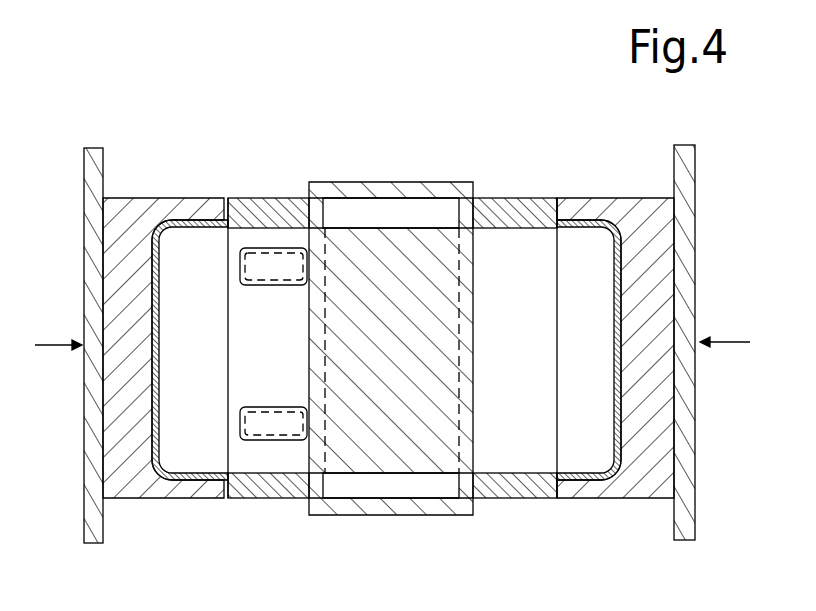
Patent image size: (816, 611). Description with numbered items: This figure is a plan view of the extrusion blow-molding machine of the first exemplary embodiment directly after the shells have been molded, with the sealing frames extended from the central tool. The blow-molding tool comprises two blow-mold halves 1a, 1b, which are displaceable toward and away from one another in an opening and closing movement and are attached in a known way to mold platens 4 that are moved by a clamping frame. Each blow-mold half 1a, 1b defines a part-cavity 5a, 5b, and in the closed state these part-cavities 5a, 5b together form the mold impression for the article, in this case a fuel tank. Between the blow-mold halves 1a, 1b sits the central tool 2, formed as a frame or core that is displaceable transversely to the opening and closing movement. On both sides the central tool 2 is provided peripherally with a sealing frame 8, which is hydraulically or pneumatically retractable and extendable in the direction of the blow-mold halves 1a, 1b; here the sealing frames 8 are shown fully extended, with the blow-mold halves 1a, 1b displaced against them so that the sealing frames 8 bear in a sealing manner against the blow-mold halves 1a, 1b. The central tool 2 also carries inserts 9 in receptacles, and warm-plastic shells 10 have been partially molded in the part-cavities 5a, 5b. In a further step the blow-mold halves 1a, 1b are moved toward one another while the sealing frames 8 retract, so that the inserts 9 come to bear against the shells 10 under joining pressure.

The blow-mold half 1a is at (135, 227).
The blow-mold half 1b is at (632, 202).
The central tool 2 is at (396, 283).
The mold platen 4 is at (88, 191).
The part-cavity 5a is at (212, 349).
The part-cavity 5b is at (609, 345).
The sealing frame 8 is at (258, 200).
The insert 9 is at (273, 272).
The warm-plastic shell 10 is at (160, 405).